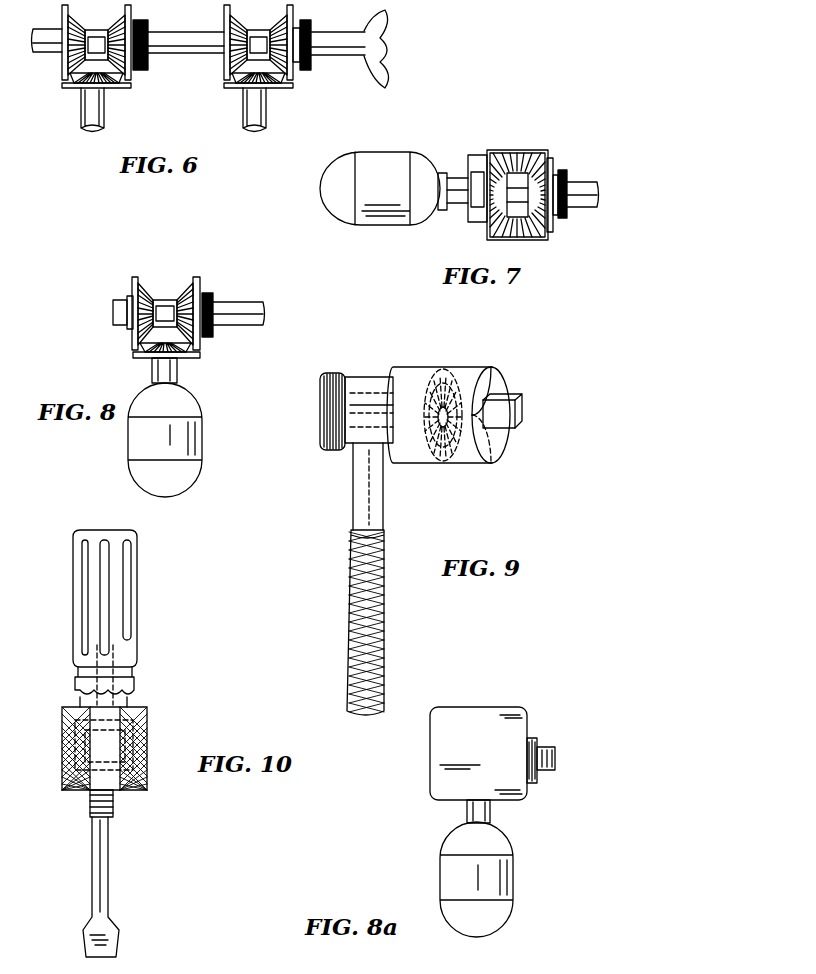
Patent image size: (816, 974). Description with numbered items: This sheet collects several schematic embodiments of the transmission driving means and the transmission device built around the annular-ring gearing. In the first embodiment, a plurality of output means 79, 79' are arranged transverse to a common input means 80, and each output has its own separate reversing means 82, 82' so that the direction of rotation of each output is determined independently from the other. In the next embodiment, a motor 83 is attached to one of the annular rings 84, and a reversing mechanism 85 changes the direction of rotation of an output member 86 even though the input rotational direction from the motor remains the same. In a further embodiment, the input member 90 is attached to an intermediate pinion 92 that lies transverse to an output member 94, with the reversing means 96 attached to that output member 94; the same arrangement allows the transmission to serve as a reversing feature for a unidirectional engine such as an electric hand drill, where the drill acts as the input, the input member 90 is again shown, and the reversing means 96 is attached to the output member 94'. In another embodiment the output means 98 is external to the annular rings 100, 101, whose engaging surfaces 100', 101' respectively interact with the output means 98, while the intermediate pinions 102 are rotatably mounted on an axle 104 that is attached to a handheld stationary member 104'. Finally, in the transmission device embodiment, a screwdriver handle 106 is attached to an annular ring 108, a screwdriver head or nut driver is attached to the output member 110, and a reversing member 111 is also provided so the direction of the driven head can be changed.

In FIG. 6, the output means 79 is at (108, 110).
In FIG. 6, the output means 79' is at (273, 110).
In FIG. 6, the input means 80 is at (388, 62).
In FIG. 6, the reversing means 82 is at (156, 36).
In FIG. 6, the reversing means 82' is at (322, 39).
In FIG. 7, the motor 83 is at (392, 212).
In FIG. 7, the annular ring 84 is at (480, 153).
In FIG. 7, the reversing mechanism 85 is at (568, 176).
In FIG. 7, the output member 86 is at (587, 199).
In FIG. 8, the input member 90 is at (177, 373).
In FIG. 8A, the input member 90 is at (490, 815).
In FIG. 8, the intermediate pinion 92 is at (140, 341).
In FIG. 8, the output member 94 is at (246, 305).
In FIG. 8A, the output member 94' is at (558, 750).
In FIG. 8, the reversing means 96 is at (213, 293).
In FIG. 8A, the reversing means 96 is at (535, 788).
In FIG. 9, the output means 98 is at (462, 364).
In FIG. 9, the annular ring 100 is at (440, 394).
In FIG. 9, the engaging surface 100' is at (430, 399).
In FIG. 9, the annular ring 101 is at (515, 394).
In FIG. 9, the engaging surface 101' is at (503, 449).
In FIG. 9, the intermediate pinions 102 is at (477, 370).
In FIG. 9, the axle 104 is at (510, 411).
In FIG. 9, the handheld stationary member 104' is at (314, 411).
In FIG. 10, the screwdriver handle 106 is at (137, 545).
In FIG. 10, the annular ring 108 is at (147, 713).
In FIG. 10, the output member 110 is at (105, 860).
In FIG. 10, the reversing member 111 is at (114, 805).